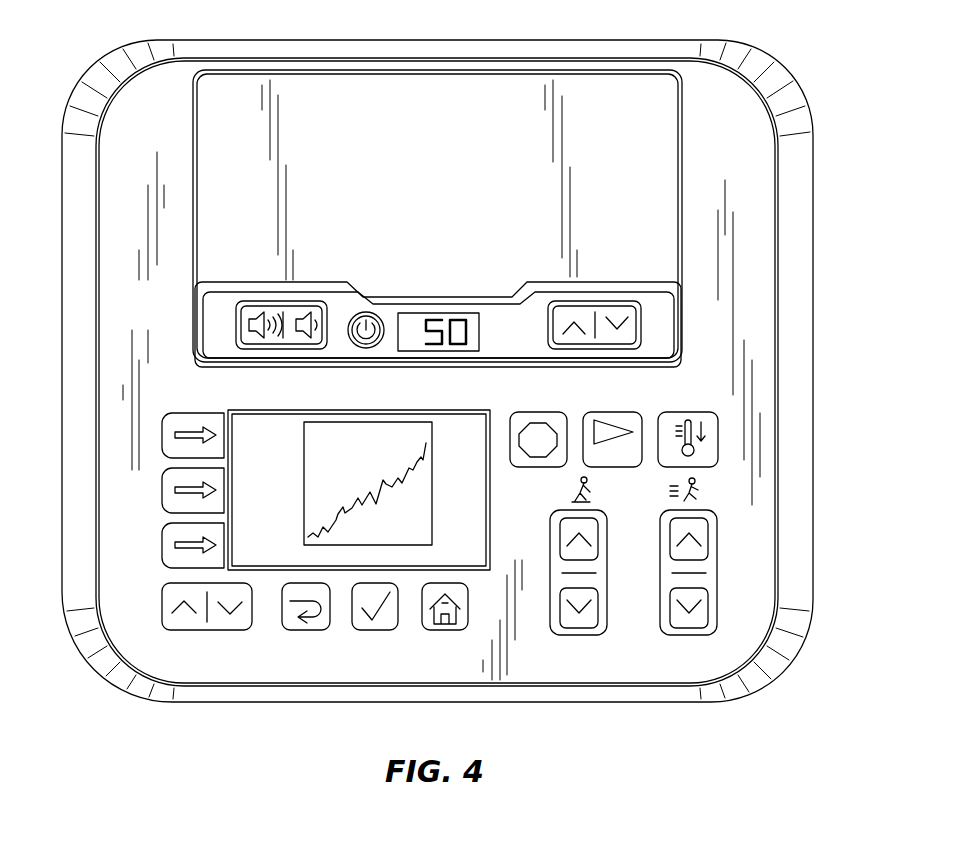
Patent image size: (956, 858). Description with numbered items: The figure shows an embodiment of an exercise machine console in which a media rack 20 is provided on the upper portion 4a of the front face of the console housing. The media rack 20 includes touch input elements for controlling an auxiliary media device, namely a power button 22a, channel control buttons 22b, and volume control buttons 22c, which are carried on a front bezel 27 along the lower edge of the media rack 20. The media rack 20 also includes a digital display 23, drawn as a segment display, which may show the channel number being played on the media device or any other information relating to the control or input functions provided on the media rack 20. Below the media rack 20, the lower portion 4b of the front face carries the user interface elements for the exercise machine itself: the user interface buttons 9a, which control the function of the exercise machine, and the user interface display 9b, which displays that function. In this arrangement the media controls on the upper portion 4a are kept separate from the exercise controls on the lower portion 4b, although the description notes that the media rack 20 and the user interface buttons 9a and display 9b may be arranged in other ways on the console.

The upper portion 4a is at (727, 130).
The lower portion 4b is at (750, 538).
The media rack 20 is at (608, 224).
The front bezel 27 is at (217, 318).
The power button 22a is at (356, 308).
The channel control buttons 22b is at (633, 339).
The volume control buttons 22c is at (295, 338).
The digital display 23 is at (421, 312).
The user interface display 9b is at (265, 513).
The user interface buttons 9a is at (292, 620).